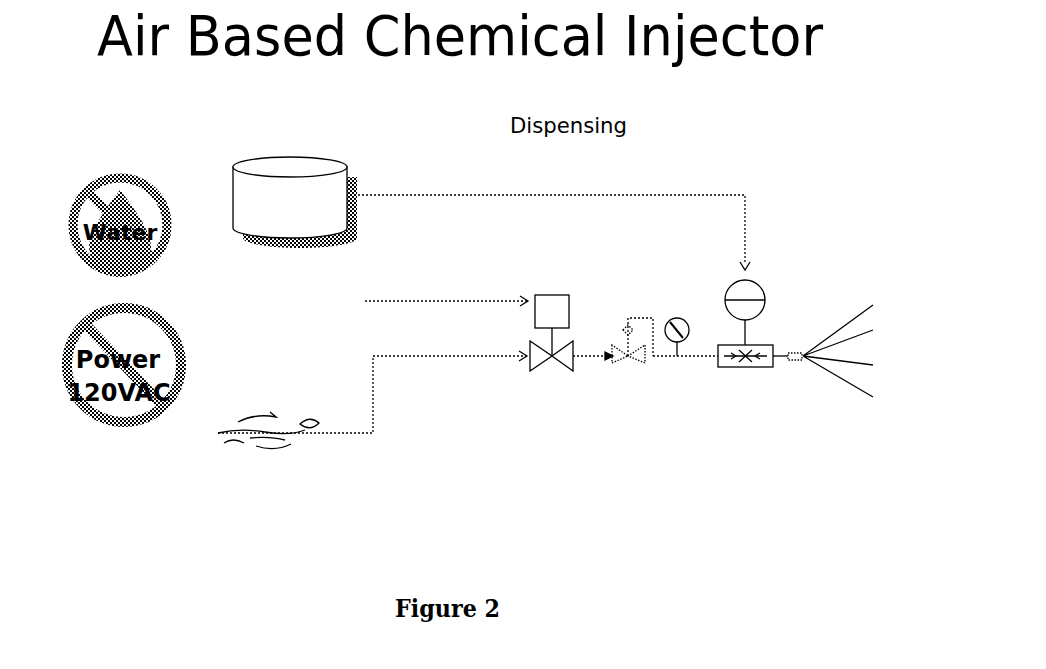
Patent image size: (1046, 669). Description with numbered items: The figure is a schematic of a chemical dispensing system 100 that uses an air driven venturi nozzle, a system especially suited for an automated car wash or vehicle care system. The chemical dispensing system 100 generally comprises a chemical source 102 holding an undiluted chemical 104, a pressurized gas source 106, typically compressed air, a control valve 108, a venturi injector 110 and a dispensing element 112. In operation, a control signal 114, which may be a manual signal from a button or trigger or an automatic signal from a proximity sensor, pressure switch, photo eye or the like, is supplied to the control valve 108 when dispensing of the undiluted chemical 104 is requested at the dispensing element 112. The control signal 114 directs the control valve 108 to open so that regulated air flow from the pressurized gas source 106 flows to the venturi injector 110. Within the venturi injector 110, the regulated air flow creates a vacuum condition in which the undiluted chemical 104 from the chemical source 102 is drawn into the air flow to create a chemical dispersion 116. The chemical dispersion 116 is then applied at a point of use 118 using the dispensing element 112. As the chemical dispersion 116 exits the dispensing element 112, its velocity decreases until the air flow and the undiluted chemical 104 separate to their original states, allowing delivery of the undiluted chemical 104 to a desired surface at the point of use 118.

The chemical dispensing system 100 is at (618, 467).
The chemical source 102 is at (237, 160).
The undiluted chemical 104 is at (332, 160).
The pressurized gas source 106 is at (235, 453).
The control valve 108 is at (540, 373).
The venturi injector 110 is at (743, 368).
The dispensing element 112 is at (790, 347).
The control signal 114 is at (230, 283).
The chemical dispersion 116 is at (777, 363).
The point of use 118 is at (858, 310).